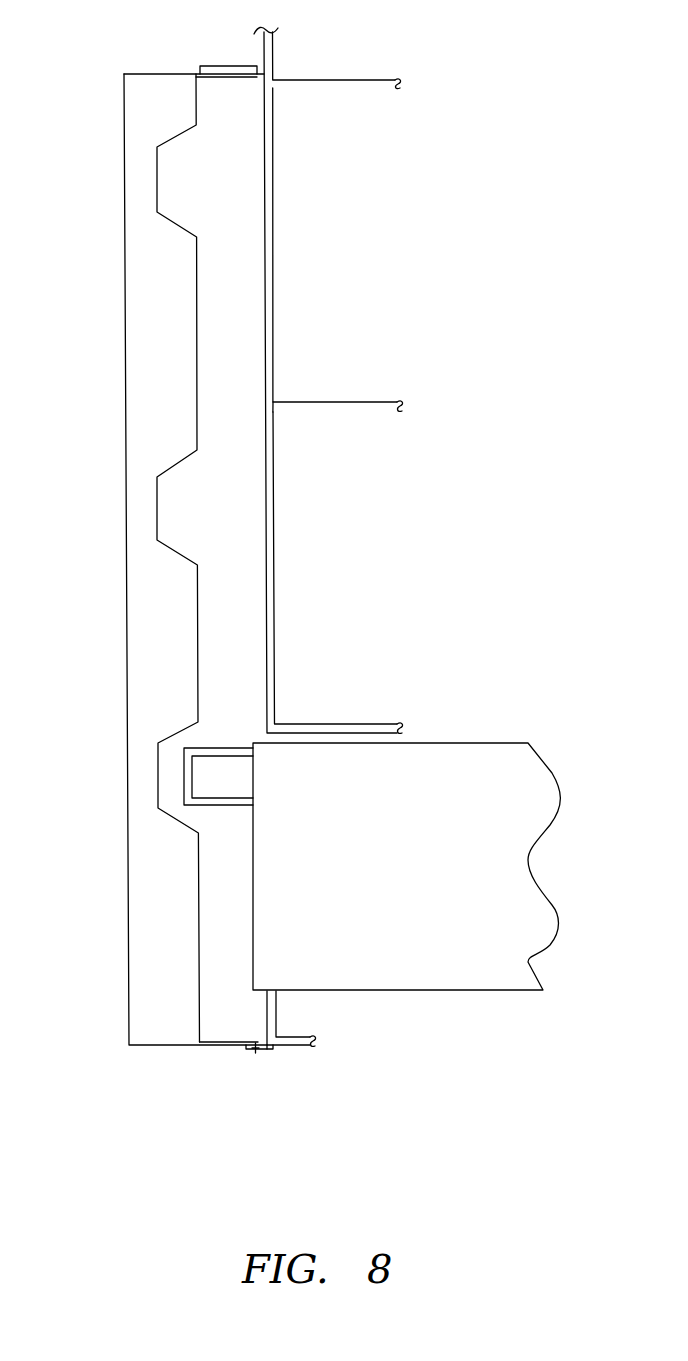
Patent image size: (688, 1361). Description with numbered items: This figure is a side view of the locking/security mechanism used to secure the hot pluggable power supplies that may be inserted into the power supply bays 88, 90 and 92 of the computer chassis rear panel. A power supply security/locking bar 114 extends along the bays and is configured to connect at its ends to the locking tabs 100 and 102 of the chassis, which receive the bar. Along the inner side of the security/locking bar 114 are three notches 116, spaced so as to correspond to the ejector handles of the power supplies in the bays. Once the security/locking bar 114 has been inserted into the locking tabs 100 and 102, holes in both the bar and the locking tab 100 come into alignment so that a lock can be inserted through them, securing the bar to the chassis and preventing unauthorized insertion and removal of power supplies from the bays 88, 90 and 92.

The power supply bay 88 is at (415, 982).
The power supply bay 90 is at (390, 592).
The power supply bay 92 is at (388, 258).
The locking tab 100 is at (223, 74).
The locking tab 102 is at (272, 1049).
The security/locking bar 114 is at (157, 347).
The notches 116 is at (157, 150).